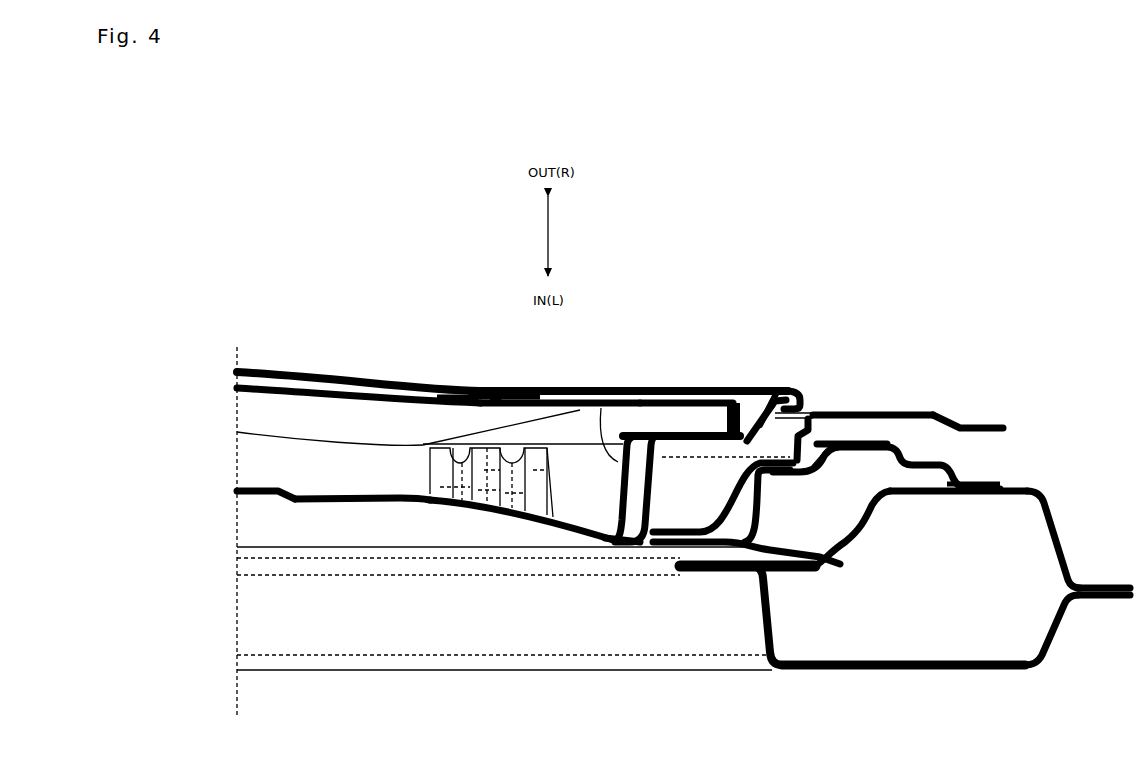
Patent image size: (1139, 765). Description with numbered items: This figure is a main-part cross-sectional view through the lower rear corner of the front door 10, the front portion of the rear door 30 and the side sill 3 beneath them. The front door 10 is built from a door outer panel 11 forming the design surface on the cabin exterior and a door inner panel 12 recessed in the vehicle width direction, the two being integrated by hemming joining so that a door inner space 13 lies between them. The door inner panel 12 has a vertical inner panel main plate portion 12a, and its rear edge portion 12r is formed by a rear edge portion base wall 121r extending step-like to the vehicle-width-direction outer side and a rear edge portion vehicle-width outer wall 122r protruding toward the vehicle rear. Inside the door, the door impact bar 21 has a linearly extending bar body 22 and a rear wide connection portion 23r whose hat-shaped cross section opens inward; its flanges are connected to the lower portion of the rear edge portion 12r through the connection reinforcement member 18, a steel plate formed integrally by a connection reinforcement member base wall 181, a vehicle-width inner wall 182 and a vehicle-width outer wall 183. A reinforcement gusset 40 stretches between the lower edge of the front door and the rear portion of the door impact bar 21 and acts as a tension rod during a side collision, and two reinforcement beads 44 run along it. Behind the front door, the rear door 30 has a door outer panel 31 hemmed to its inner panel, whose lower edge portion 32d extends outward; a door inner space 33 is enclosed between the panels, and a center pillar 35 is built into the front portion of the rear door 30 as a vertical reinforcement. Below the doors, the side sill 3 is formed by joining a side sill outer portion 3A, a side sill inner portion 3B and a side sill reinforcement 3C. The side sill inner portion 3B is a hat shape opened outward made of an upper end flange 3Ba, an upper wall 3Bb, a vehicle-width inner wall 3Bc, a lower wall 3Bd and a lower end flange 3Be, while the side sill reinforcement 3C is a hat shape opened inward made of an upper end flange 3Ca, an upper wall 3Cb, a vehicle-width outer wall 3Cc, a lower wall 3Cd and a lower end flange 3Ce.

The side sill 3 is at (1010, 670).
The side sill outer portion 3A is at (785, 542).
The side sill inner portion 3B is at (1037, 668).
The upper end flange 3Ba is at (707, 578).
The upper wall 3Bb is at (762, 612).
The vehicle-width inner wall 3Bc is at (834, 668).
The lower wall 3Bd is at (1045, 640).
The lower end flange 3Be is at (1098, 598).
The side sill reinforcement 3C is at (1050, 505).
The upper end flange 3Ca is at (677, 553).
The upper wall 3Cb is at (878, 517).
The vehicle-width outer wall 3Cc is at (963, 495).
The lower wall 3Cd is at (1063, 557).
The lower end flange 3Ce is at (1090, 583).
The front door 10 is at (390, 350).
The door outer panel 11 is at (345, 366).
The door inner panel 12 is at (252, 493).
The inner panel main plate portion 12a is at (318, 494).
The rear edge portion 12r is at (763, 377).
The door inner space 13 is at (290, 462).
The connection reinforcement member 18 is at (540, 524).
The connection reinforcement member base wall 181 is at (604, 432).
The vehicle-width inner wall 182 is at (553, 532).
The vehicle-width outer wall 183 is at (710, 430).
The door impact bar 21 is at (552, 399).
The bar body 22 is at (440, 395).
The rear wide connection portion 23r is at (703, 396).
The rear door 30 is at (930, 372).
The door outer panel 31 is at (894, 410).
The lower edge portion 32d is at (972, 440).
The door inner space 33 is at (847, 430).
The center pillar 35 is at (865, 436).
The reinforcement gusset 40 is at (428, 466).
The reinforcement beads 44 is at (462, 498).
The rear edge portion base wall 121r is at (625, 548).
The rear edge portion vehicle-width outer wall 122r is at (770, 392).